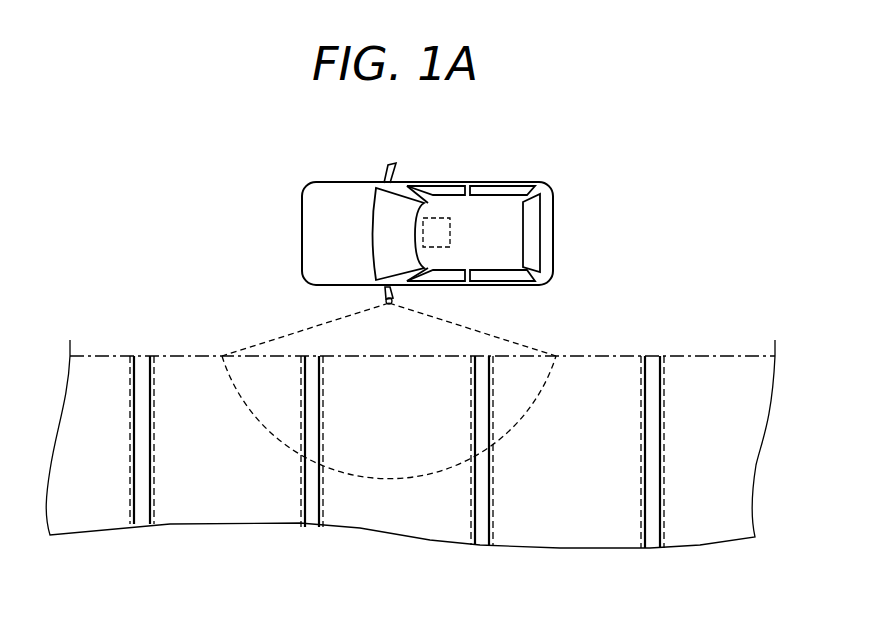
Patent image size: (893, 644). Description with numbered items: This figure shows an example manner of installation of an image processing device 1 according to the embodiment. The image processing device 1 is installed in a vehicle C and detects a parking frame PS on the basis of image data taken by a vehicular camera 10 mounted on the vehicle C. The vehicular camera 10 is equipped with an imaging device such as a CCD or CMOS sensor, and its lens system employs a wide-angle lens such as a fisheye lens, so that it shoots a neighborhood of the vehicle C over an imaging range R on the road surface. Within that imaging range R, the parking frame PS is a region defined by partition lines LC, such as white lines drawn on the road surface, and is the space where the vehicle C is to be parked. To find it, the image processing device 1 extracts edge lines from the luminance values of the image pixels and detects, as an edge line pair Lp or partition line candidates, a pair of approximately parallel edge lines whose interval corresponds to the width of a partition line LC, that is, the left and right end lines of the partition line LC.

The image processing device 1 is at (452, 218).
The vehicular camera 10 is at (384, 297).
The vehicle C is at (531, 182).
The imaging range R is at (524, 355).
The parking frame PS is at (357, 356).
The partition line LC is at (313, 529).
The edge line pair (partition line candidates) Lp is at (322, 492).